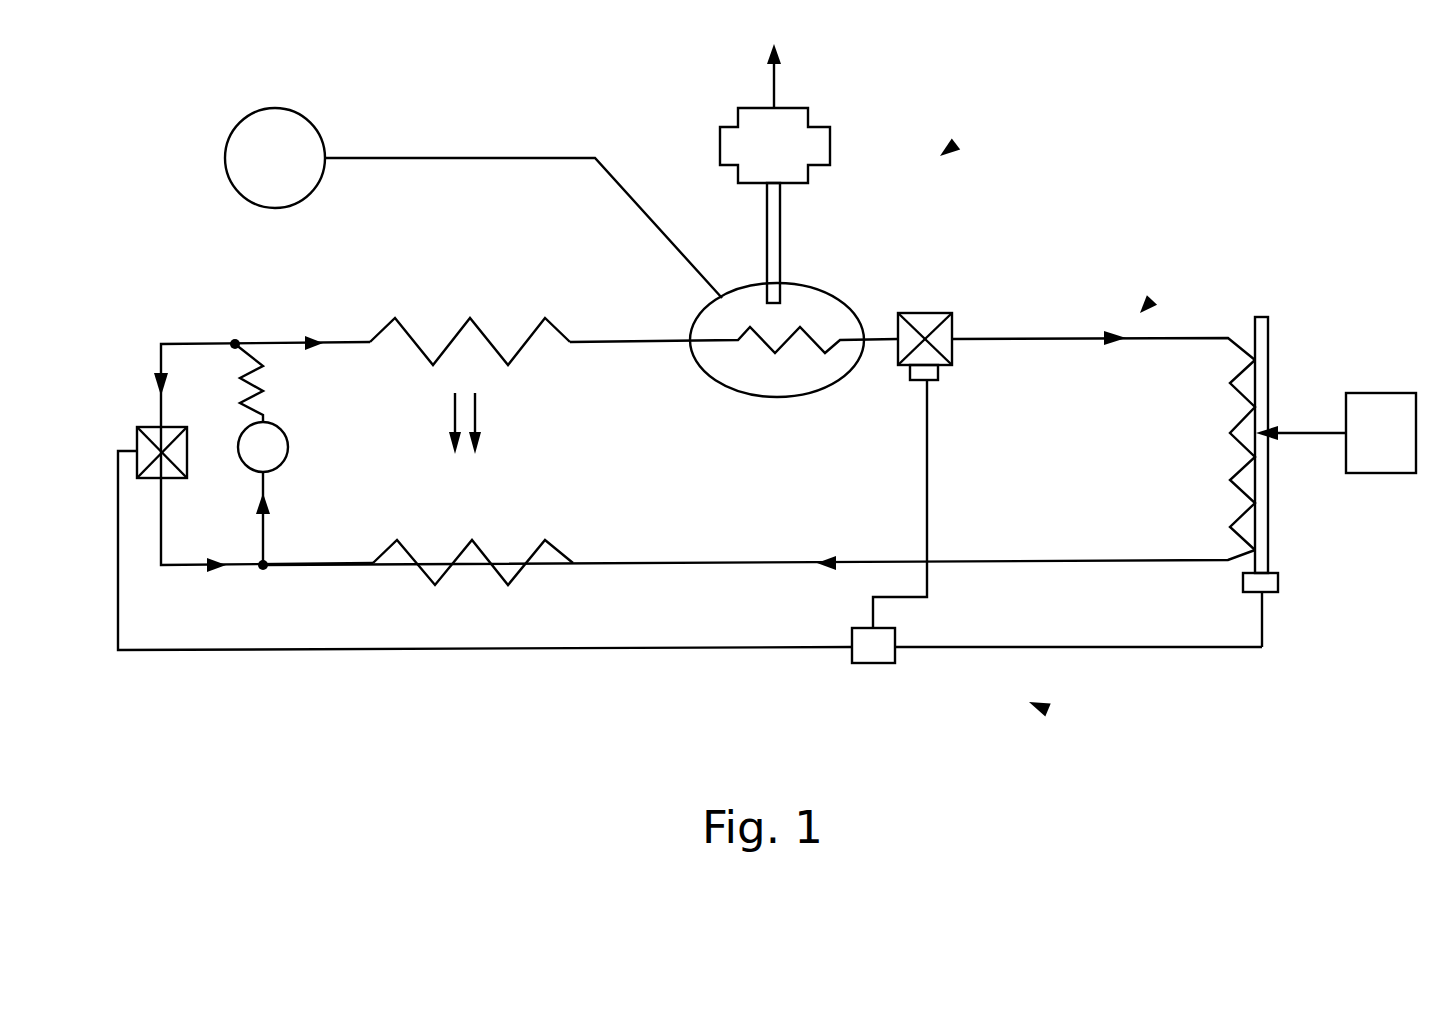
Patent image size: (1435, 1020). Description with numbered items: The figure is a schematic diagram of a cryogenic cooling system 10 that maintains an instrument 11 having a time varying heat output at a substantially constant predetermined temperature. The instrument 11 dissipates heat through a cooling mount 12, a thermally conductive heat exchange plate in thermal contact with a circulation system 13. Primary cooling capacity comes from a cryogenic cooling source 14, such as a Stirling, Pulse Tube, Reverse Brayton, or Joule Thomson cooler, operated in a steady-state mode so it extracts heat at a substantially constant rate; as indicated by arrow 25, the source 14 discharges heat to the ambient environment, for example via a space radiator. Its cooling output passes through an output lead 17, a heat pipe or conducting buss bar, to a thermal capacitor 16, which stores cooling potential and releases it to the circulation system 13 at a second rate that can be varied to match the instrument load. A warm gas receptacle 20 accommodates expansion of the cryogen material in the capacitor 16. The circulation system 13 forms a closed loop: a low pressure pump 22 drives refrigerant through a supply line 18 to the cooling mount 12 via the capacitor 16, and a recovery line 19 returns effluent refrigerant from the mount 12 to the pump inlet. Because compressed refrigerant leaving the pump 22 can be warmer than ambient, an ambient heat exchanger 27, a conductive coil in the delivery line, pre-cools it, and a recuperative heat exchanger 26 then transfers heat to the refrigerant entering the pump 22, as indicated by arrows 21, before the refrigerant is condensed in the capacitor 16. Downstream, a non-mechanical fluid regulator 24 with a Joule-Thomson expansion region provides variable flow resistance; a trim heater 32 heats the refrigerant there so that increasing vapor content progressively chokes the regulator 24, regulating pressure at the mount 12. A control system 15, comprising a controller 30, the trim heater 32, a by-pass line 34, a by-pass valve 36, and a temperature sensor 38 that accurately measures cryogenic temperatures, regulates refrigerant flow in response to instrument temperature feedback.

The cryogenic cooling system 10 is at (950, 148).
The instrument 11 is at (1360, 393).
The cooling mount 12 is at (1270, 335).
The circulation system 13 is at (1155, 300).
The cryogenic cooling source 14 is at (832, 143).
The control system 15 is at (1040, 705).
The thermal capacitor 16 is at (828, 297).
The output lead 17 is at (782, 228).
The supply line 18 is at (1013, 336).
The recovery line 19 is at (1075, 563).
The warm gas receptacle 20 is at (300, 115).
The arrows 21 is at (476, 410).
The low pressure pump 22 is at (290, 445).
The non-mechanical fluid regulator 24 is at (937, 313).
The arrow 25 is at (778, 62).
The recuperative heat exchanger 26 is at (405, 330).
The ambient heat exchanger 27 is at (258, 366).
The controller 30 is at (873, 663).
The trim heater 32 is at (935, 385).
The by-pass line 34 is at (183, 342).
The by-pass valve 36 is at (140, 427).
The temperature sensor 38 is at (1280, 583).